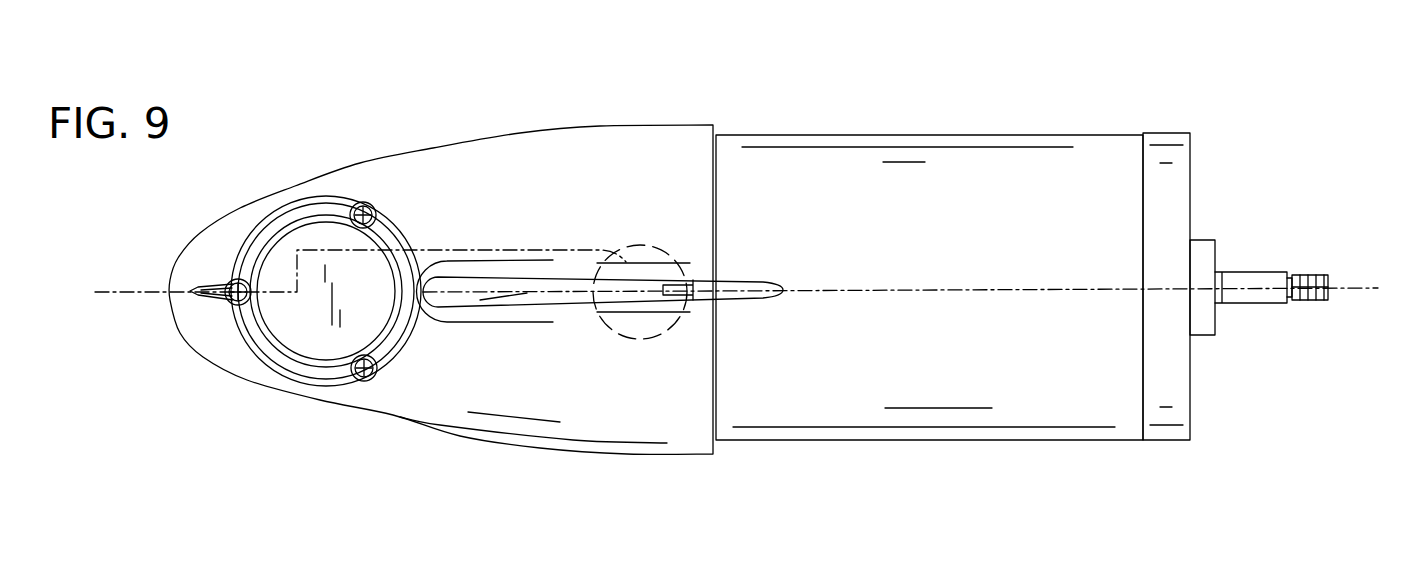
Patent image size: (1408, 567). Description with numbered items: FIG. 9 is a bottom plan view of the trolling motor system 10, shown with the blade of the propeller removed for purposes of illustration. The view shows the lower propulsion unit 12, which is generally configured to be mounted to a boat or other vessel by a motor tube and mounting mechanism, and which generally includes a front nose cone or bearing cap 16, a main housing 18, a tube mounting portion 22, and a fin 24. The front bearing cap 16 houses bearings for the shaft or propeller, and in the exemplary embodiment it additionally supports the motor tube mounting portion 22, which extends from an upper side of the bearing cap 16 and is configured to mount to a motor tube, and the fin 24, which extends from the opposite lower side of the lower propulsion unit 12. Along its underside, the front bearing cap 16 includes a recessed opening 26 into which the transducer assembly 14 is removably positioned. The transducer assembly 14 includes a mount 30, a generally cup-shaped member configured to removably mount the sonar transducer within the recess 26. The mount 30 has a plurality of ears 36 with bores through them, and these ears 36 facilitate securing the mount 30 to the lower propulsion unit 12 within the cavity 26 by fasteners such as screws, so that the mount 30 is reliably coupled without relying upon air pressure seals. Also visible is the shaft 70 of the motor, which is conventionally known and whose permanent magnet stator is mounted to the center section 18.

The trolling motor system 10 is at (1092, 76).
The lower propulsion unit 12 is at (950, 441).
The transducer assembly 14 is at (280, 362).
The front nose cone or bearing cap 16 is at (435, 148).
The main housing 18 is at (940, 135).
The tube mounting portion 22 is at (623, 345).
The fin 24 is at (740, 280).
The recessed opening 26 is at (290, 229).
The mount 30 is at (317, 343).
The ears 36 is at (232, 283).
The shaft 70 is at (1253, 272).